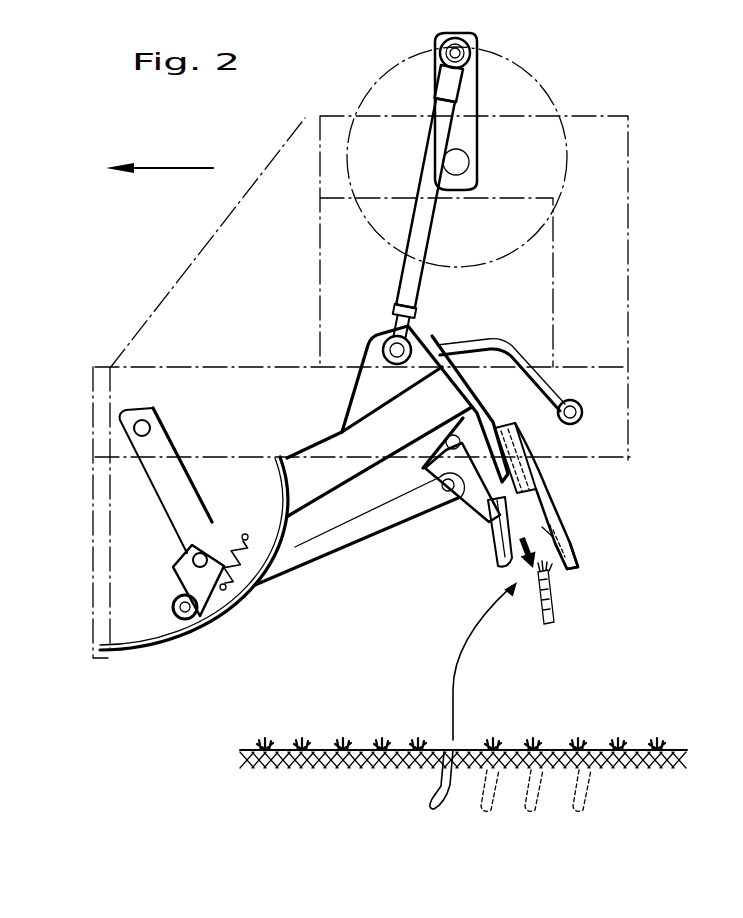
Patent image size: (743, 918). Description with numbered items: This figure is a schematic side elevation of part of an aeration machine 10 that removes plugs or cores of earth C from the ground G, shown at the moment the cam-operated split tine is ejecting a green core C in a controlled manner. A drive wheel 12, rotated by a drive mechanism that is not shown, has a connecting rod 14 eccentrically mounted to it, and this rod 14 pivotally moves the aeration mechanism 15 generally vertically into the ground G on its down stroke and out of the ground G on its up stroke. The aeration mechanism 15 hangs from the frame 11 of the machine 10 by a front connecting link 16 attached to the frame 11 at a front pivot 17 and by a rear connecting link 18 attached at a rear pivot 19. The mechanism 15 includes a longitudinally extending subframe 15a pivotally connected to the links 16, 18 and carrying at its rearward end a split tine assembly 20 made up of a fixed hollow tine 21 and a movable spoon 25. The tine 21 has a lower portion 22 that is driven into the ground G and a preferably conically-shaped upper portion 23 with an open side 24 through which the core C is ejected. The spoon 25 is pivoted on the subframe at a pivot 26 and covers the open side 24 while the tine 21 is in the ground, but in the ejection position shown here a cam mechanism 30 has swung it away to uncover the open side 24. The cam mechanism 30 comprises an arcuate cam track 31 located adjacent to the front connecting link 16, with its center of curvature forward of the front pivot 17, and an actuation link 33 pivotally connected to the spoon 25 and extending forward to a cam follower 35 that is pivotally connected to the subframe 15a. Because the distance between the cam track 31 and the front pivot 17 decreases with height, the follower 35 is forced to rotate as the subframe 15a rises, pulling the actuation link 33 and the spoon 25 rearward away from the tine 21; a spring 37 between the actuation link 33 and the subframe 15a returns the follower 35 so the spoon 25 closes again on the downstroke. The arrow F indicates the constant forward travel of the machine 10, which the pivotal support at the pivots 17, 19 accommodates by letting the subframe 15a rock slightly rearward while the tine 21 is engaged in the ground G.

The aeration machine 10 is at (586, 94).
The frame 11 is at (605, 460).
The drive wheel 12 is at (520, 72).
The connecting rod 14 is at (413, 185).
The aeration mechanism 15 is at (304, 522).
The subframe 15a is at (310, 453).
The front connecting link 16 is at (162, 420).
The front pivot 17 is at (140, 420).
The rear connecting link 18 is at (473, 333).
The rear pivot 19 is at (573, 398).
The split tine assembly 20 is at (607, 515).
The fixed hollow tine 21 is at (572, 540).
The lower portion 22 is at (578, 566).
The upper portion 23 is at (528, 465).
The open side 24 is at (489, 530).
The movable spoon 25 is at (492, 560).
The pivot 26 is at (446, 437).
The cam mechanism 30 is at (293, 614).
The arcuate cam track 31 is at (228, 621).
The actuation link 33 is at (312, 553).
The cam follower 35 is at (173, 604).
The spring 37 is at (240, 532).
The core C is at (553, 610).
The direction of forward travel F is at (155, 168).
The ground G is at (633, 750).